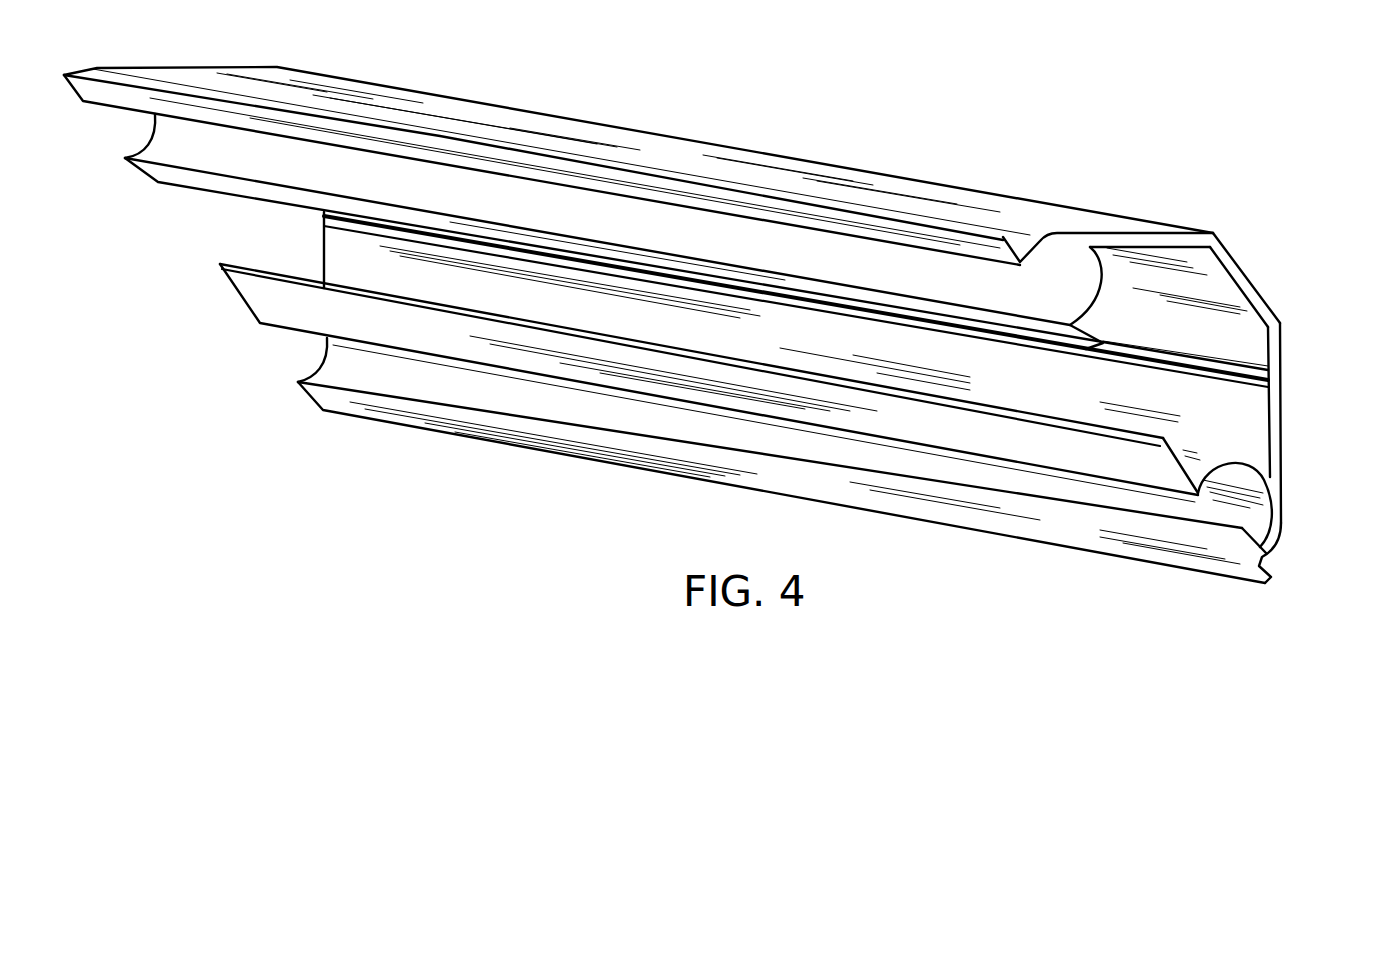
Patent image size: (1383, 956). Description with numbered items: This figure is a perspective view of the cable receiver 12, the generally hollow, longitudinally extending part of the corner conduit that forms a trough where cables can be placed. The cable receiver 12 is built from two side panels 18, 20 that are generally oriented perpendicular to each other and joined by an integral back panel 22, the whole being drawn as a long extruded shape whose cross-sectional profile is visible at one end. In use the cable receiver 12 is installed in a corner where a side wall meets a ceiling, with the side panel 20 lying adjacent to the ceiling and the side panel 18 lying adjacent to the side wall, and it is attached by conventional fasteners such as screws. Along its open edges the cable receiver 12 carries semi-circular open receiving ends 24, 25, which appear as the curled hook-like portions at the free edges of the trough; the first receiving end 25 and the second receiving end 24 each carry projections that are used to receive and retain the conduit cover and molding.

The cable receiver 12 is at (238, 297).
The side panel 18 is at (1285, 420).
The side panel 20 is at (1136, 233).
The back panel 22 is at (1250, 268).
The second receiving end 24 is at (152, 114).
The first receiving end 25 is at (1270, 552).